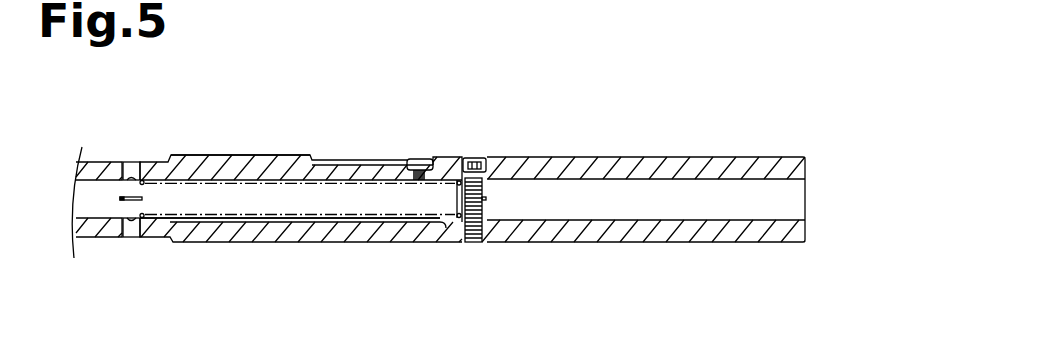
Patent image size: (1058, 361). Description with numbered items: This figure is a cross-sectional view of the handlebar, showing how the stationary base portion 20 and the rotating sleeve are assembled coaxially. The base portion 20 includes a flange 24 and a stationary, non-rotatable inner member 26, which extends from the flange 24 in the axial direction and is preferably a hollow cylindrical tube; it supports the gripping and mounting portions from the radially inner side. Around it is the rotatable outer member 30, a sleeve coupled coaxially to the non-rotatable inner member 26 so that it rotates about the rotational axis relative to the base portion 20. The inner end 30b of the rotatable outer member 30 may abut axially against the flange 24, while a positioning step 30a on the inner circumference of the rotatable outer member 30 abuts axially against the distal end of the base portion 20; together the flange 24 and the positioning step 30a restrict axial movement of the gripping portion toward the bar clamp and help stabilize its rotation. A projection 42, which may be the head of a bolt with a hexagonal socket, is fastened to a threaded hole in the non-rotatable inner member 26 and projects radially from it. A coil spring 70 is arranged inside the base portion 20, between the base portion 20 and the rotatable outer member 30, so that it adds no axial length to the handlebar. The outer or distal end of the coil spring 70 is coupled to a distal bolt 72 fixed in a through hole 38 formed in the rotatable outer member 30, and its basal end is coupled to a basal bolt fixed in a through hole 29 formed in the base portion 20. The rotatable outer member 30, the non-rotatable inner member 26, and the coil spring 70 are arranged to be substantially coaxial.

The base portion 20 is at (267, 244).
The flange 24 is at (172, 243).
The non-rotatable inner member 26 is at (148, 294).
The through hole 29 is at (131, 162).
The rotatable outer member 30 is at (295, 243).
The positioning step 30a is at (437, 243).
The inner end 30b is at (192, 155).
The through hole 38 is at (472, 243).
The projection 42 is at (415, 159).
The coil spring 70 is at (371, 215).
The distal bolt 72 is at (480, 158).